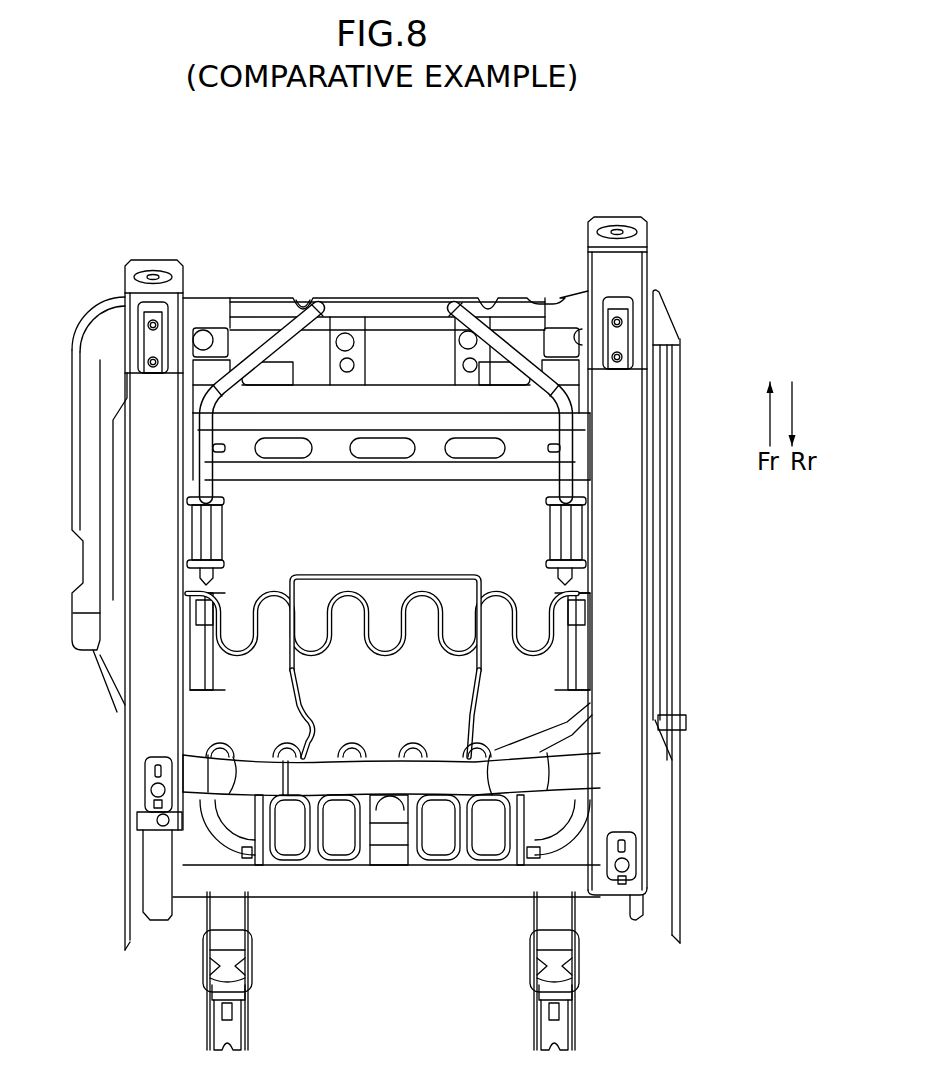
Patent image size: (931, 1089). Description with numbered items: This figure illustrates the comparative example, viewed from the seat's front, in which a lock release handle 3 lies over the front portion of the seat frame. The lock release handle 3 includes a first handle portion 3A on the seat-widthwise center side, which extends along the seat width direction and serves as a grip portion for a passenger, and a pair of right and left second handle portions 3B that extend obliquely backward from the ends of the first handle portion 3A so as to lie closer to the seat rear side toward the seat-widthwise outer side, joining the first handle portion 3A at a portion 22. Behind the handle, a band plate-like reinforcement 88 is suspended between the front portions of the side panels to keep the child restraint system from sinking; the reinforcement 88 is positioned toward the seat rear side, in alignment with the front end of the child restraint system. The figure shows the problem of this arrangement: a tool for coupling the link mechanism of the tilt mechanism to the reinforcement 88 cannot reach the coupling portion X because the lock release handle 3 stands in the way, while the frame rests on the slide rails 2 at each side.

The slide rail 2 is at (130, 570).
The lock release handle 3 is at (386, 452).
The first handle portion 3A is at (385, 305).
The second handle portion 3B is at (258, 360).
The joint portion 22 is at (330, 296).
The reinforcement 88 is at (383, 470).
The coupling portion X is at (226, 452).